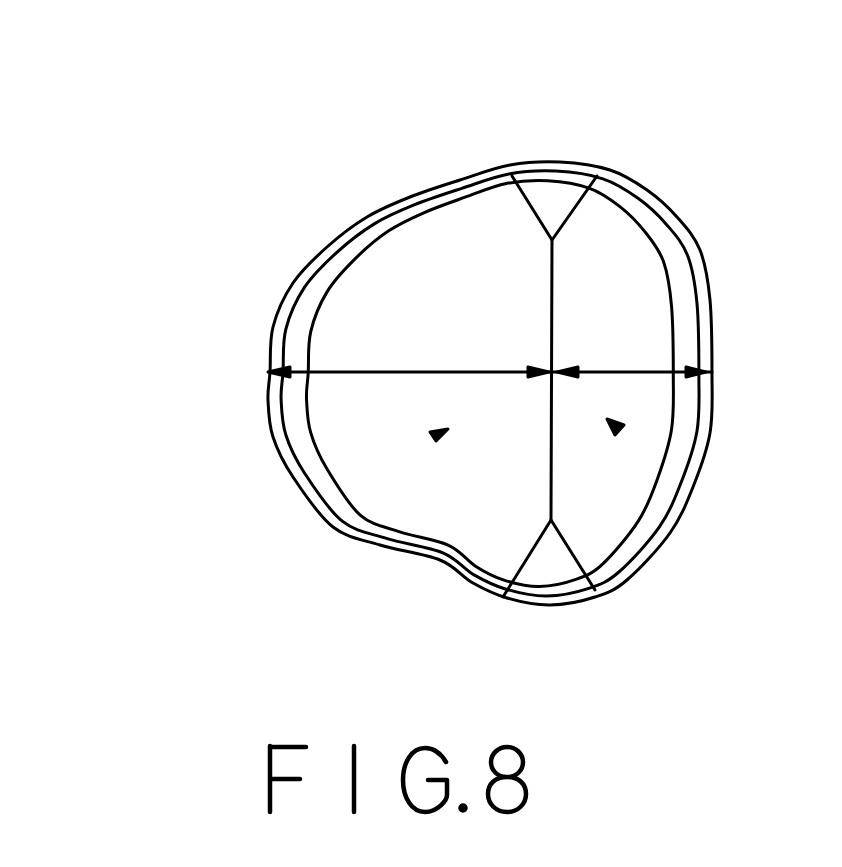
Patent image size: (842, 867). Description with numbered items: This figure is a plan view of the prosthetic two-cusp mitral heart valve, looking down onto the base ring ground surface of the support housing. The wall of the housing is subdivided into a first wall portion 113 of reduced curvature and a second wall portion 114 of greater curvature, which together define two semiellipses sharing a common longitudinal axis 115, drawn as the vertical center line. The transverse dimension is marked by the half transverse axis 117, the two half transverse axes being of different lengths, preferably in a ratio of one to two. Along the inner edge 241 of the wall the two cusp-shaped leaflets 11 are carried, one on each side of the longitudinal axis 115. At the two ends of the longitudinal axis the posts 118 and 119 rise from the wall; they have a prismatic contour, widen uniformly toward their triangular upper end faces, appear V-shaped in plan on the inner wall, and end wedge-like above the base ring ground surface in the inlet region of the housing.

The cusp-shaped leaflets 11 is at (445, 431).
The first wall portion 113 is at (705, 305).
The second wall portion 114 is at (275, 333).
The common longitudinal axis 115 is at (547, 295).
The half transverse axis 117 is at (360, 372).
The post 118 is at (552, 195).
The post 119 is at (547, 568).
The inner edge 241 is at (660, 304).